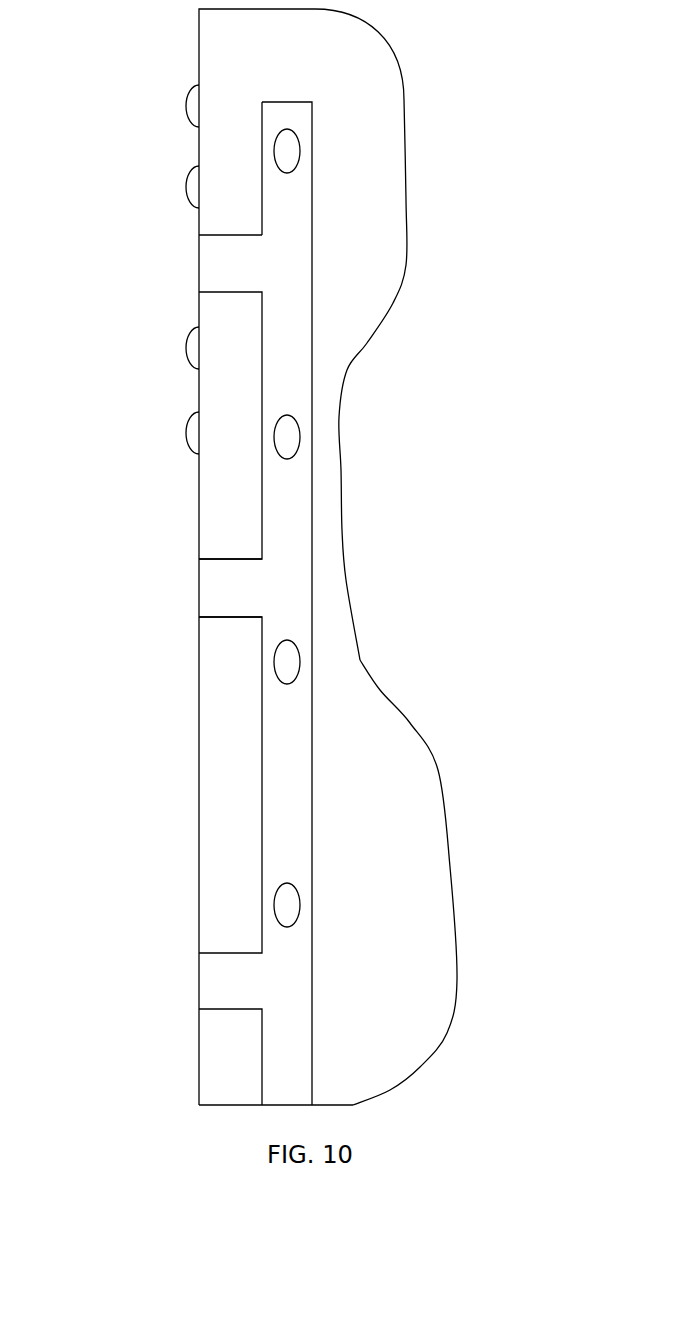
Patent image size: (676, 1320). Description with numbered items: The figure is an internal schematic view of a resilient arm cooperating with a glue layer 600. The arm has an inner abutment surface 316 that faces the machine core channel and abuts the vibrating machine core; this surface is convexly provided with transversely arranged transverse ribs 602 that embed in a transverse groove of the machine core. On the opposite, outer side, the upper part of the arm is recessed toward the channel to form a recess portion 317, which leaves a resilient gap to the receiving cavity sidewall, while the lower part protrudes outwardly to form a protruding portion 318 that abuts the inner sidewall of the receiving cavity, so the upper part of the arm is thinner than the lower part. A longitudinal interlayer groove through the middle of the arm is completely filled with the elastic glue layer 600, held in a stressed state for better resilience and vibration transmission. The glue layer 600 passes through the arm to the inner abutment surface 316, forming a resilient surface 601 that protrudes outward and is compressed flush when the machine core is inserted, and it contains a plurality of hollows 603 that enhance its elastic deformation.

The inner abutment surface 316 is at (198, 773).
The recess portion 317 is at (342, 523).
The protruding portion 318 is at (450, 868).
The glue layer 600 is at (293, 705).
The resilient surface 601 is at (198, 590).
The transverse rib 602 is at (192, 430).
The hollows 603 is at (287, 151).